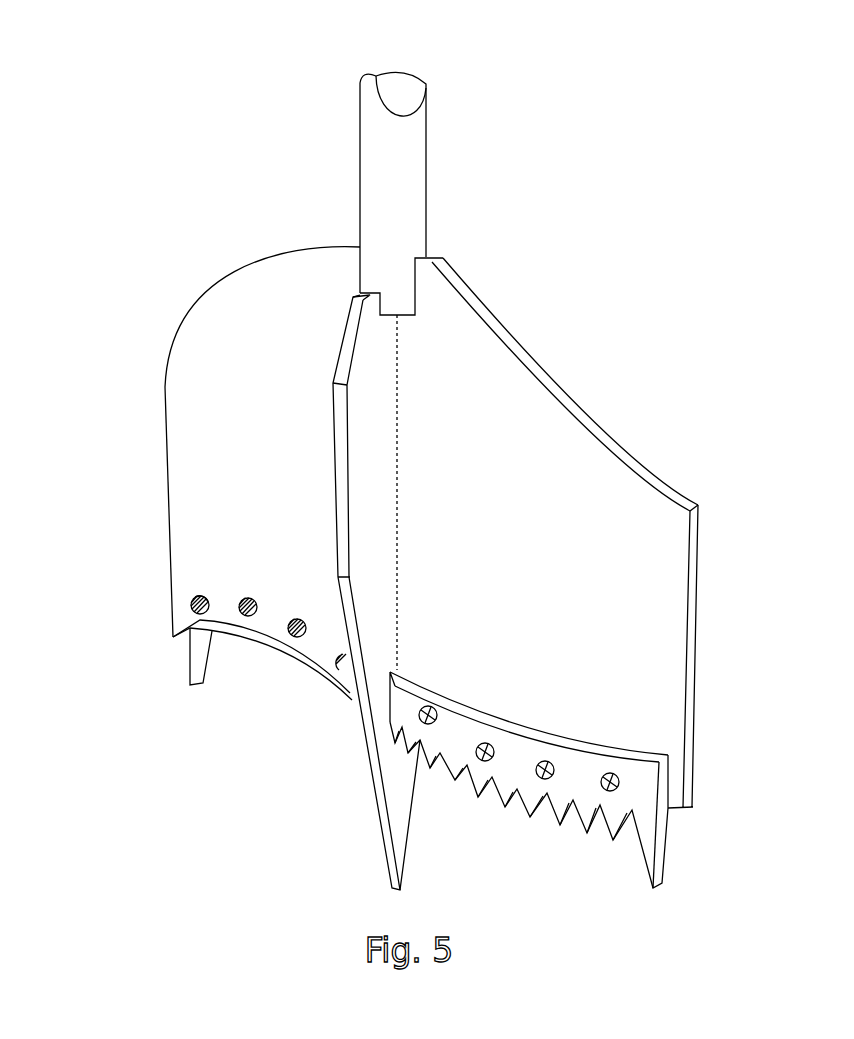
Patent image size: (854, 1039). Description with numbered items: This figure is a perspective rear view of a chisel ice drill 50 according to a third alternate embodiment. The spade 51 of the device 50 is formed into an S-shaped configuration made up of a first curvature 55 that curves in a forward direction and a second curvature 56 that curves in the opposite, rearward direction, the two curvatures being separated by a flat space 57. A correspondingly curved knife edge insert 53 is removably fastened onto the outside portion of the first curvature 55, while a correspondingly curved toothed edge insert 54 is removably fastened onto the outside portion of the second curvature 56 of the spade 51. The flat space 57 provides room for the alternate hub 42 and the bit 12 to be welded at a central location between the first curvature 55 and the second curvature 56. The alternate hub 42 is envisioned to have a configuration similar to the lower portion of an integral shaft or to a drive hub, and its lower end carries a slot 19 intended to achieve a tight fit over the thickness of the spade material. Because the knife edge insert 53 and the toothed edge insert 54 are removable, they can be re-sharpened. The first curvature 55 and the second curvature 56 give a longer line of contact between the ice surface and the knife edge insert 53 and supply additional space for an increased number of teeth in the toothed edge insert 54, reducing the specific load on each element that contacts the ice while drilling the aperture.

The chisel ice drill 50 is at (118, 86).
The alternate hub 42 is at (405, 142).
The slot 19 is at (415, 282).
The bit 12 is at (392, 802).
The first curvature 55 is at (257, 323).
The spade 51 is at (202, 433).
The flat space 57 is at (378, 442).
The knife edge insert 53 is at (253, 632).
The second curvature 56 is at (622, 517).
The toothed edge insert 54 is at (558, 823).